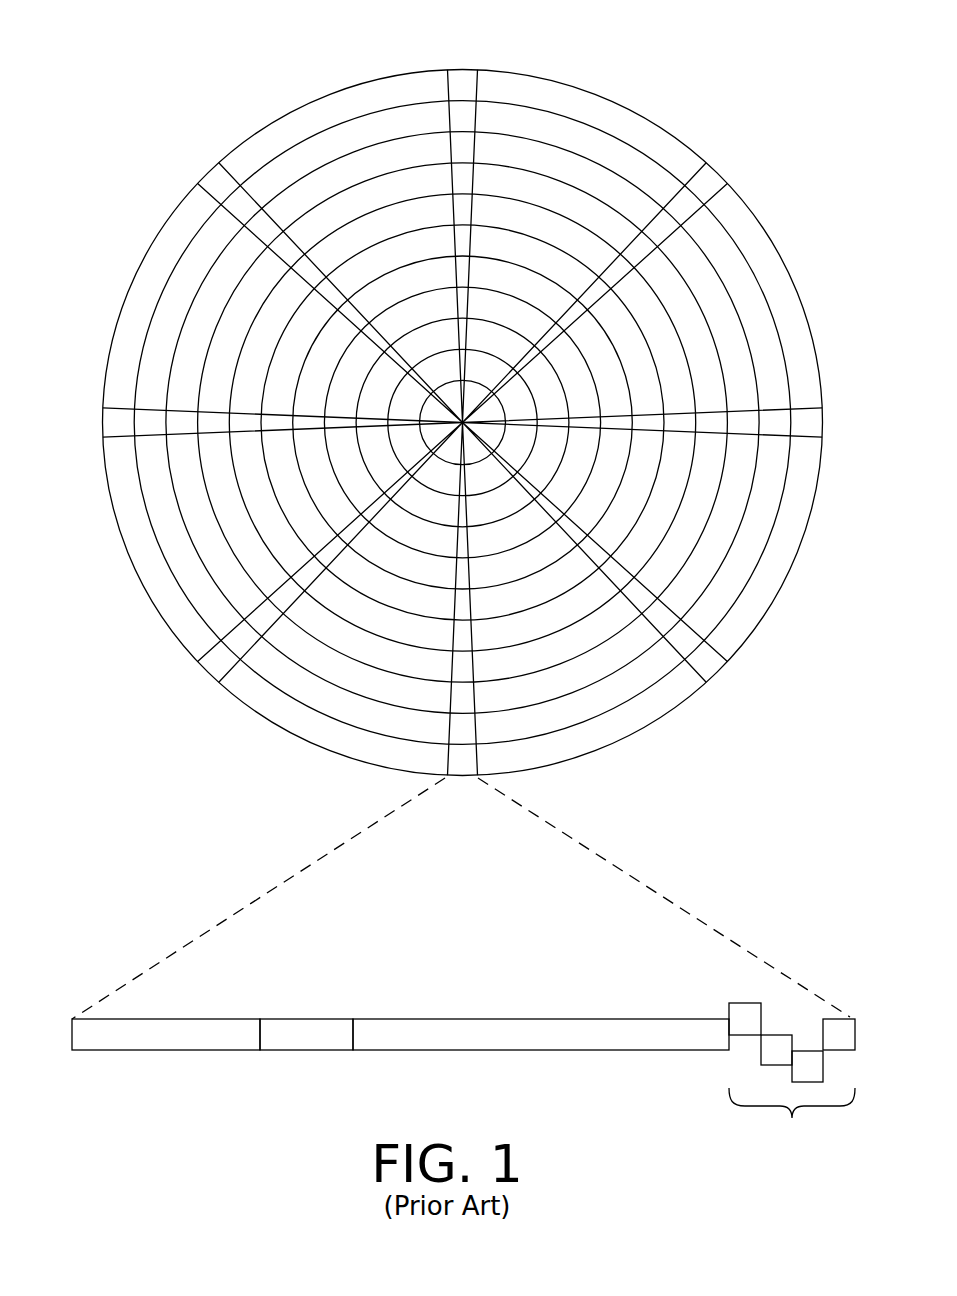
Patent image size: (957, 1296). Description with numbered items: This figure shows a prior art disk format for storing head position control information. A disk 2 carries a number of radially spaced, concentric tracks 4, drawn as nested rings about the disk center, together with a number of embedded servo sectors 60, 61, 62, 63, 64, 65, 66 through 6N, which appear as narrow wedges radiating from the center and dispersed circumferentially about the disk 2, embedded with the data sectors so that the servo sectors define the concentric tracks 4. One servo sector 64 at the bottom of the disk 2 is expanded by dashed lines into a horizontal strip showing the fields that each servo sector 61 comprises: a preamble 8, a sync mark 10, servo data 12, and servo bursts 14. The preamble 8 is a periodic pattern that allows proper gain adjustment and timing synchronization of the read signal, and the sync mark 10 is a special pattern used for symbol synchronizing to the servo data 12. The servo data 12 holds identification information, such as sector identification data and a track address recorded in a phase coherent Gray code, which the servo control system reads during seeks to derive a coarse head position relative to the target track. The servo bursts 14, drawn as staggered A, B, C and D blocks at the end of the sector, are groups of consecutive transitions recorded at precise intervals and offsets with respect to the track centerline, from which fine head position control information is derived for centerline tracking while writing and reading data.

The disk 2 is at (196, 73).
The concentric tracks 4 is at (583, 142).
The embedded servo sector 60 is at (463, 78).
The embedded servo sector 61 is at (708, 182).
The embedded servo sector 62 is at (818, 424).
The embedded servo sector 63 is at (708, 668).
The embedded servo sector 64 is at (306, 860).
The embedded servo sector 65 is at (215, 668).
The embedded servo sector 66 is at (108, 421).
The embedded servo sector 6N is at (215, 178).
The preamble 8 is at (143, 1051).
The sync mark 10 is at (302, 1052).
The servo data 12 is at (527, 1052).
The servo bursts 14 is at (716, 985).